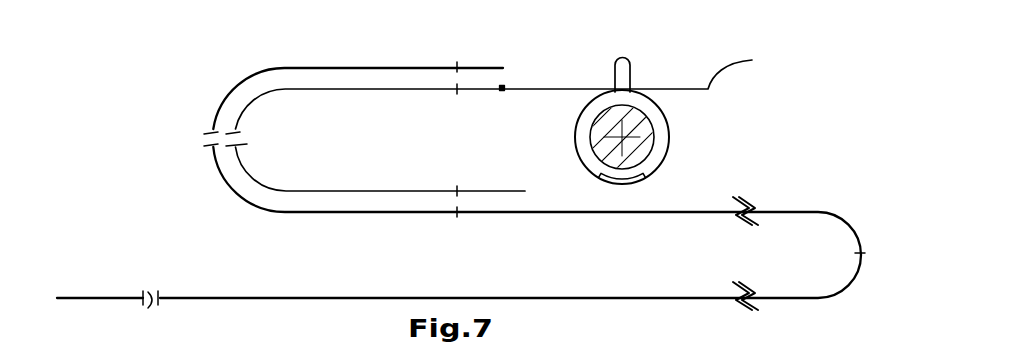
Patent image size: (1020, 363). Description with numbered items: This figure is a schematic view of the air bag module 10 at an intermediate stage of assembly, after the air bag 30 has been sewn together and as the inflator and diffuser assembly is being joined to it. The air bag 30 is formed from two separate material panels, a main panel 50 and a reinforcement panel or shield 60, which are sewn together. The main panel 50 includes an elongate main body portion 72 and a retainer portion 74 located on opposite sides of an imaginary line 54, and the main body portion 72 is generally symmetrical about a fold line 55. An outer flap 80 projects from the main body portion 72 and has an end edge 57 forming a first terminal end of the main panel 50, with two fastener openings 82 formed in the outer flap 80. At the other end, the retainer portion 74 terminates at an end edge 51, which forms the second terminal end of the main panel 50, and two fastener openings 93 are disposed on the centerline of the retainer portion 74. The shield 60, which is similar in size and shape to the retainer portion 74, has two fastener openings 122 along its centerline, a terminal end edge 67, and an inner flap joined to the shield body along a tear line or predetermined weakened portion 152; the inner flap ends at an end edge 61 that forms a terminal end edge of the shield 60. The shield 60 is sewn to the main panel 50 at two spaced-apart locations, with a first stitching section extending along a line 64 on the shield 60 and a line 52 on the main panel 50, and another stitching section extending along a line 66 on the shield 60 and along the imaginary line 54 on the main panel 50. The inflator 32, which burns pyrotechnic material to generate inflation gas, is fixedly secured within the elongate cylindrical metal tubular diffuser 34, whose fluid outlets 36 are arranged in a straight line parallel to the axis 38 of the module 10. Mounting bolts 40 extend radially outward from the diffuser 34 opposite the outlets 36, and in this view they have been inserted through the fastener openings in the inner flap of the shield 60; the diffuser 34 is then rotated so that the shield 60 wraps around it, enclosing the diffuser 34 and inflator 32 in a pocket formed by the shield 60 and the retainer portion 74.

The air bag module 10 is at (793, 173).
The air bag 30 is at (158, 224).
The inflator 32 is at (601, 148).
The diffuser 34 is at (668, 132).
The fluid outlets 36 is at (643, 183).
The axis 38 is at (645, 127).
The mounting bolts 40 is at (624, 65).
The main panel 50 is at (302, 308).
The end edge 51 is at (503, 67).
The line 52 is at (457, 62).
The imaginary line 54 is at (457, 217).
The fold line 55 is at (860, 253).
The end edge 57 is at (57, 298).
The shield 60 is at (325, 171).
The end edge 61 is at (767, 61).
The line 64 is at (457, 94).
The line 66 is at (457, 191).
The terminal end edge 67 is at (525, 191).
The main body portion 72 is at (649, 226).
The retainer portion 74 is at (324, 225).
The outer flap 80 is at (93, 298).
The fastener openings 82 is at (151, 310).
The fastener openings 93 is at (206, 143).
The fastener openings 122 is at (247, 139).
The tear line 152 is at (502, 88).